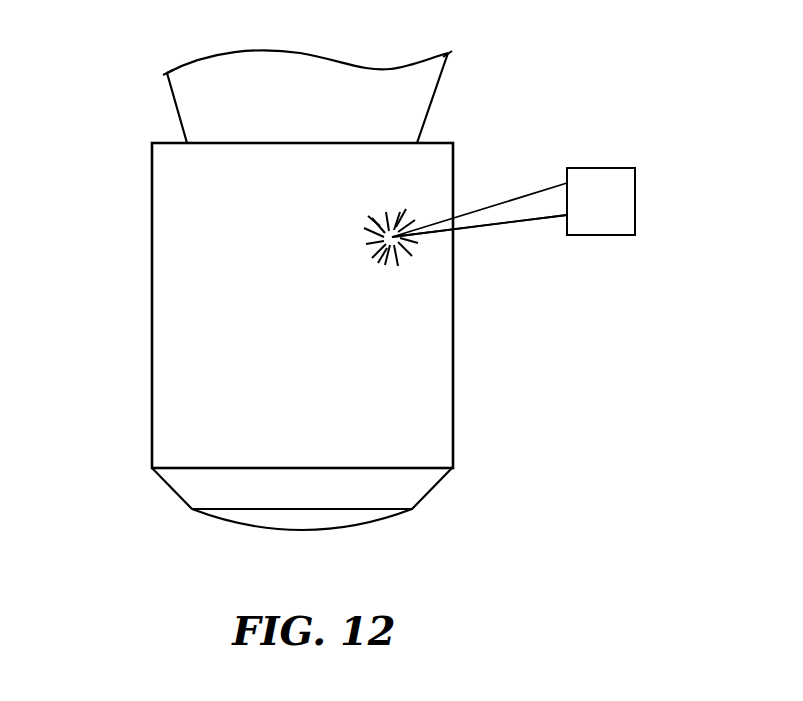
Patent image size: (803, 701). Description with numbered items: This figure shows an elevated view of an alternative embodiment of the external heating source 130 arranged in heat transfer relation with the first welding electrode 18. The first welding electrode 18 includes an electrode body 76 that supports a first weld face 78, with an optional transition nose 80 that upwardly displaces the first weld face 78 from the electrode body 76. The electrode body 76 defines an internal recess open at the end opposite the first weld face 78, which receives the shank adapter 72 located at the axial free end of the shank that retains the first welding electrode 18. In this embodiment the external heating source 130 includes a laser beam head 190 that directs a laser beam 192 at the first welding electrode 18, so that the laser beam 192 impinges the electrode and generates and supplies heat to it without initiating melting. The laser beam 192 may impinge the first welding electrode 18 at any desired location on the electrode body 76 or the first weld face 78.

The first welding electrode 18 is at (168, 517).
The shank adapter 72 is at (193, 108).
The electrode body 76 is at (173, 240).
The first weld face 78 is at (302, 535).
The transition nose 80 is at (193, 488).
The external heating source 130 is at (554, 181).
The laser beam head 190 is at (584, 212).
The laser beam 192 is at (507, 213).